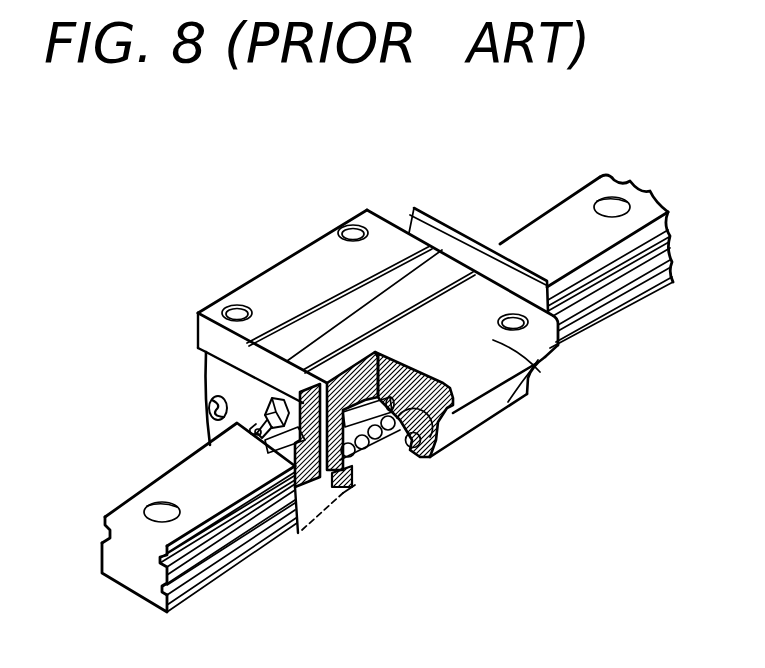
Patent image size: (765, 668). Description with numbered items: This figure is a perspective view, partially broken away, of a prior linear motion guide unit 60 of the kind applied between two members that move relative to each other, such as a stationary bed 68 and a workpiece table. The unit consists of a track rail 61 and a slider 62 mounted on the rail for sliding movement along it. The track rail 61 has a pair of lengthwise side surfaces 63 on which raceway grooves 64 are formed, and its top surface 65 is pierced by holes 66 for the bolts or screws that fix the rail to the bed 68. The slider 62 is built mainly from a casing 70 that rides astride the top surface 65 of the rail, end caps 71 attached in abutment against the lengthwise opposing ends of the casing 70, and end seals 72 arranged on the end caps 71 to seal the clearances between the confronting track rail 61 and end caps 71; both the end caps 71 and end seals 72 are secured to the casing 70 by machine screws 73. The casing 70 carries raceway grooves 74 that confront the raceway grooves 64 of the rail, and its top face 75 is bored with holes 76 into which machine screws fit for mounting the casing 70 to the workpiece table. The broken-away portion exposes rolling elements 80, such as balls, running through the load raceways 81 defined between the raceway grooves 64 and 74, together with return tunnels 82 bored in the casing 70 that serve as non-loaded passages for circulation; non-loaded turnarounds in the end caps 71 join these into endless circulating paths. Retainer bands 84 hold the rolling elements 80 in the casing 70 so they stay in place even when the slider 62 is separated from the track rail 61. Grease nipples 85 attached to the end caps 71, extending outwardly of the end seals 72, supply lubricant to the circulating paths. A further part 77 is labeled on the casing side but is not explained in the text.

The linear motion guide unit 60 is at (512, 205).
The track rail 61 is at (605, 333).
The slider 62 is at (328, 220).
The lengthwise side surfaces 63 is at (100, 557).
The raceway grooves 64 is at (107, 528).
The top surface 65 is at (192, 485).
The holes 66 is at (153, 510).
The bed 68 is at (326, 572).
The casing 70 is at (458, 416).
The end caps 71 is at (212, 318).
The end seals 72 is at (232, 378).
The machine screws 73 is at (209, 401).
The raceway grooves 74 is at (420, 430).
The top face 75 is at (303, 263).
The holes 76 is at (237, 305).
The retainer 77 is at (503, 372).
The rolling elements 80 is at (363, 452).
The load raceways 81 is at (352, 462).
The return tunnels 82 is at (414, 452).
The retainer bands 84 is at (340, 494).
The grease nipples 85 is at (244, 424).